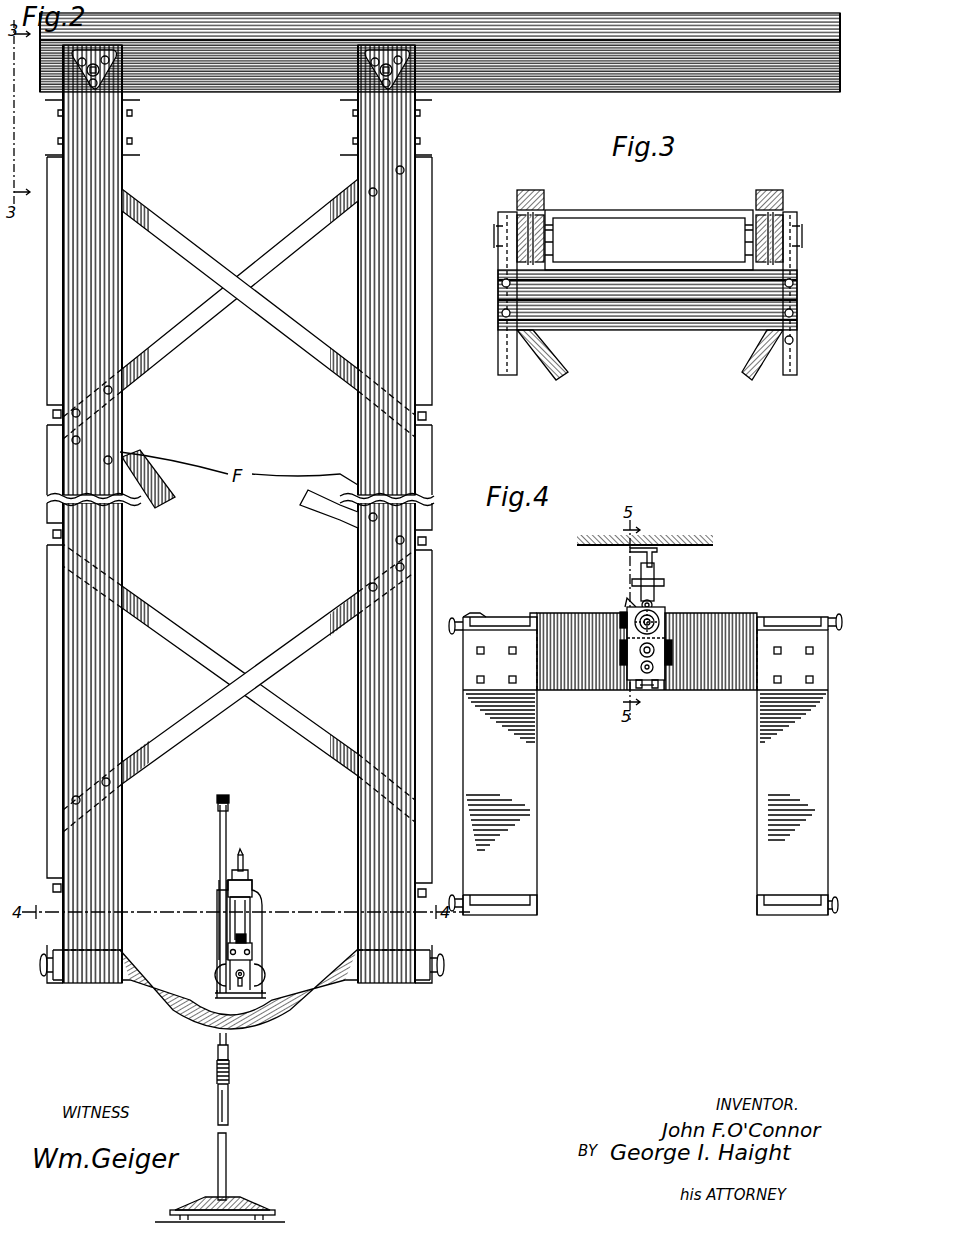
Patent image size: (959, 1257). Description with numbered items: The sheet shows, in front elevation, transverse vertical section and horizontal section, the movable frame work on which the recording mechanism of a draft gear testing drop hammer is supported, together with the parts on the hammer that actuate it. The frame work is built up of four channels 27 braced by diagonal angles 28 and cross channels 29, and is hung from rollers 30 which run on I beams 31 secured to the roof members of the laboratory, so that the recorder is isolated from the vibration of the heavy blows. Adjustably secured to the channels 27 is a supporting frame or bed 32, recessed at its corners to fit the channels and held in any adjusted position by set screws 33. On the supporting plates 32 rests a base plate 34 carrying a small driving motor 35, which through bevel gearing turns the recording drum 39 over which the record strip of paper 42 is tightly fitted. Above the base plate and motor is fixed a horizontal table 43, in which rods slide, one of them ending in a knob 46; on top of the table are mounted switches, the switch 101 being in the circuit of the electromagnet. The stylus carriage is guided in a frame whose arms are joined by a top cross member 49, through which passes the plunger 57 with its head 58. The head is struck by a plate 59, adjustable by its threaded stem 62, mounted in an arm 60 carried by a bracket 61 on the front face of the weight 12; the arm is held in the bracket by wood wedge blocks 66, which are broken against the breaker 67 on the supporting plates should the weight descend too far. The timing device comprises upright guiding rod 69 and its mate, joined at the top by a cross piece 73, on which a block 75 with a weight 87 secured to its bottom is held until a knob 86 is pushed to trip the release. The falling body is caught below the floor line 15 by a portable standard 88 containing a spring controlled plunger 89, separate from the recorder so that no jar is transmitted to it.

In FIG. 4, the weight 12 is at (680, 538).
In FIG. 2, the floor line 15 is at (282, 1214).
In FIG. 2, the channel 27 is at (122, 856).
In FIG. 3, the channel 27 is at (507, 375).
In FIG. 4, the channel 27 is at (492, 617).
In FIG. 2, the diagonal angle 28 is at (268, 310).
In FIG. 3, the diagonal angle 28 is at (562, 378).
In FIG. 2, the cross channel 29 is at (132, 128).
In FIG. 3, the cross channel 29 is at (646, 330).
In FIG. 2, the roller 30 is at (92, 50).
In FIG. 3, the roller 30 is at (517, 246).
In FIG. 2, the I beam 31 is at (262, 92).
In FIG. 3, the I beam 31 is at (546, 206).
In FIG. 2, the supporting frame 32 is at (178, 1014).
In FIG. 4, the supporting frame 32 is at (584, 690).
In FIG. 2, the set screw 33 is at (44, 978).
In FIG. 4, the set screw 33 is at (452, 618).
In FIG. 2, the base plate 34 is at (218, 994).
In FIG. 4, the base plate 34 is at (660, 690).
In FIG. 2, the driving motor 35 is at (256, 978).
In FIG. 4, the driving motor 35 is at (670, 665).
In FIG. 2, the recording drum 39 is at (262, 900).
In FIG. 4, the recording drum 39 is at (627, 612).
In FIG. 2, the record strip of paper 42 is at (250, 928).
In FIG. 2, the horizontal table 43 is at (252, 950).
In FIG. 2, the knob 46 is at (248, 954).
In FIG. 4, the knob 46 is at (652, 682).
In FIG. 2, the top cross member 49 is at (252, 886).
In FIG. 2, the plunger 57 is at (244, 860).
In FIG. 2, the head 58 is at (242, 850).
In FIG. 4, the plate 59 is at (632, 603).
In FIG. 4, the arm 60 is at (656, 576).
In FIG. 4, the bracket 61 is at (655, 570).
In FIG. 4, the threaded stem 62 is at (653, 603).
In FIG. 4, the wood wedge block 66 is at (665, 584).
In FIG. 2, the breaker 67 is at (250, 876).
In FIG. 2, the guiding rod 69 is at (217, 916).
In FIG. 2, the cross piece 73 is at (229, 800).
In FIG. 4, the cross piece 73 is at (620, 616).
In FIG. 2, the block 75 is at (220, 828).
In FIG. 2, the knob 86 is at (231, 955).
In FIG. 4, the knob 86 is at (644, 690).
In FIG. 2, the weight 87 is at (220, 868).
In FIG. 2, the portable standard 88 is at (230, 1138).
In FIG. 2, the spring controlled plunger 89 is at (232, 1051).
In FIG. 2, the switch 101 is at (246, 937).